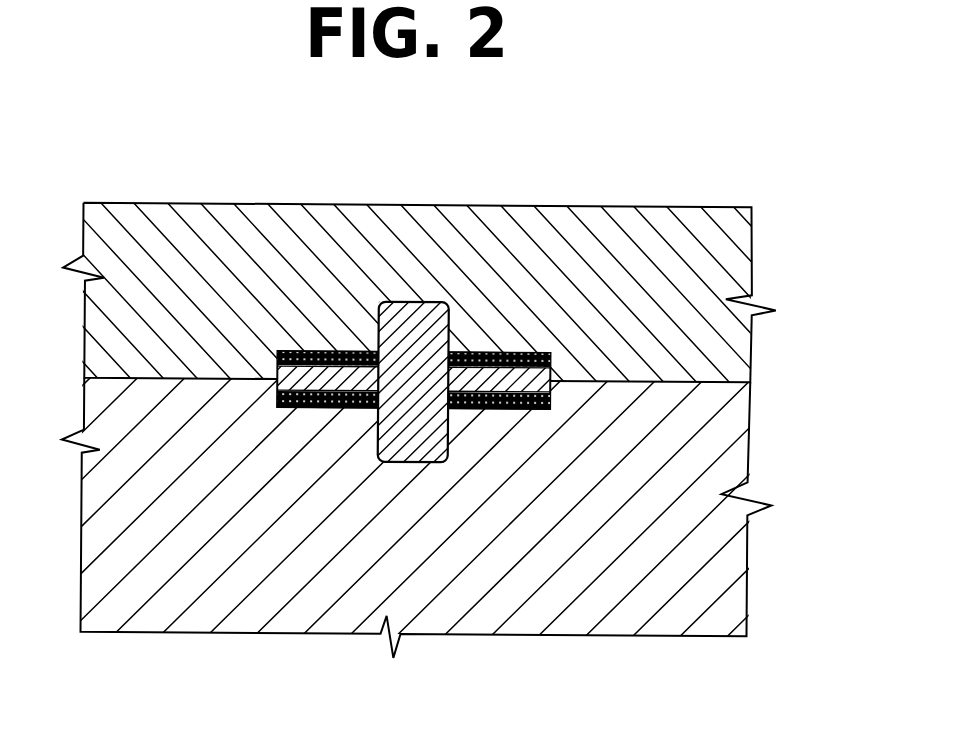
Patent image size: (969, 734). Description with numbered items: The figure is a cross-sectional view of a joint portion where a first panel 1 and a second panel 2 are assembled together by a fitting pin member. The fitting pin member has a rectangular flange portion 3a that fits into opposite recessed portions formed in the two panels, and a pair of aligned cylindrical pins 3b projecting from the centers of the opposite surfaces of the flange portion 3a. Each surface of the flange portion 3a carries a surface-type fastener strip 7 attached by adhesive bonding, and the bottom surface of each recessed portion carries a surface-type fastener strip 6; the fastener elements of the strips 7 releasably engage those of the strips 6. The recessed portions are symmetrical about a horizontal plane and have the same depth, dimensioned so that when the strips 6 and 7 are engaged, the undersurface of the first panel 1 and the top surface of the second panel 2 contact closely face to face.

The first panel 1 is at (630, 233).
The second panel 2 is at (620, 588).
The flange portion 3a is at (518, 408).
The cylindrical pin 3b is at (413, 322).
The surface-type fastener strip 6 is at (307, 355).
The surface-type fastener strip 7 is at (399, 258).